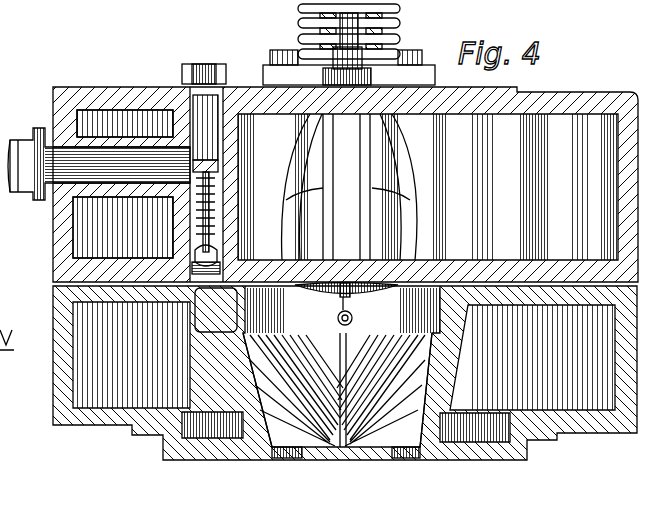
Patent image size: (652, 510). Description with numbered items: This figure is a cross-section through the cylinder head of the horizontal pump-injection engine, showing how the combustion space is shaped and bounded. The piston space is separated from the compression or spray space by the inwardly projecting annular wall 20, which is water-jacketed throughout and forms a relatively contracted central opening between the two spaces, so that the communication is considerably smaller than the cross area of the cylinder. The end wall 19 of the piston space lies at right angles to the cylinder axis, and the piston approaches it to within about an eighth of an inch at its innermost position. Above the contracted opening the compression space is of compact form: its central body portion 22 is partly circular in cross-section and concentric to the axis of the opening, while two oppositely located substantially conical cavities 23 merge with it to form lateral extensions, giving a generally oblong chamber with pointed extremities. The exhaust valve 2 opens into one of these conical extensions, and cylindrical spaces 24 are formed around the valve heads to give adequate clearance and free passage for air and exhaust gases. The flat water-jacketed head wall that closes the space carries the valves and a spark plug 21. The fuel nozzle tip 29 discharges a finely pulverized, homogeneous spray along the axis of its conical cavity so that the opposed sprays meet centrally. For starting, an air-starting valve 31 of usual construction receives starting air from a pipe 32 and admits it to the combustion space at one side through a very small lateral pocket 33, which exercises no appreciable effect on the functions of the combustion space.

The exhaust valve 2 is at (395, 44).
The end wall of the piston space 19 is at (463, 462).
The inwardly projecting annular wall 20 is at (278, 460).
The spark plug 21 is at (330, 72).
The central body portion of the compression space 22 is at (265, 345).
The conical cavities 23 is at (348, 440).
The cylindrical spaces 24 is at (372, 300).
The nozzle tip 29 is at (338, 312).
The air-starting valve 31 is at (205, 118).
The pipe 32 is at (20, 145).
The lateral pocket 33 is at (216, 310).